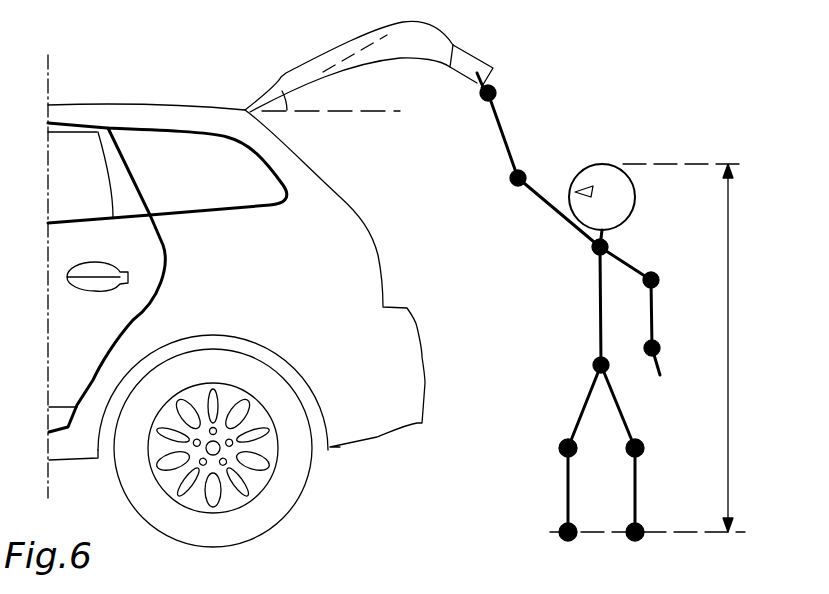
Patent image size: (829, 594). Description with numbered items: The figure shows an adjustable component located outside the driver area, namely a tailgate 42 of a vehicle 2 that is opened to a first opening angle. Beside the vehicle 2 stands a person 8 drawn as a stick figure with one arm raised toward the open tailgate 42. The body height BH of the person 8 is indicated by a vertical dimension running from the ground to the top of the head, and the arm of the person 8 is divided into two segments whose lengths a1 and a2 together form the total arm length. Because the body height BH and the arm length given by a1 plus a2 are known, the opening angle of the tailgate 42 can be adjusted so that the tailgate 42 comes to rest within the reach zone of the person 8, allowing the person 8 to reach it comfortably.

The motor vehicle 2 is at (205, 79).
The tailgate 42 is at (413, 47).
The person 8 is at (570, 289).
The arm length component a1 is at (552, 212).
The arm length component a2 is at (497, 112).
The body height BH is at (660, 348).